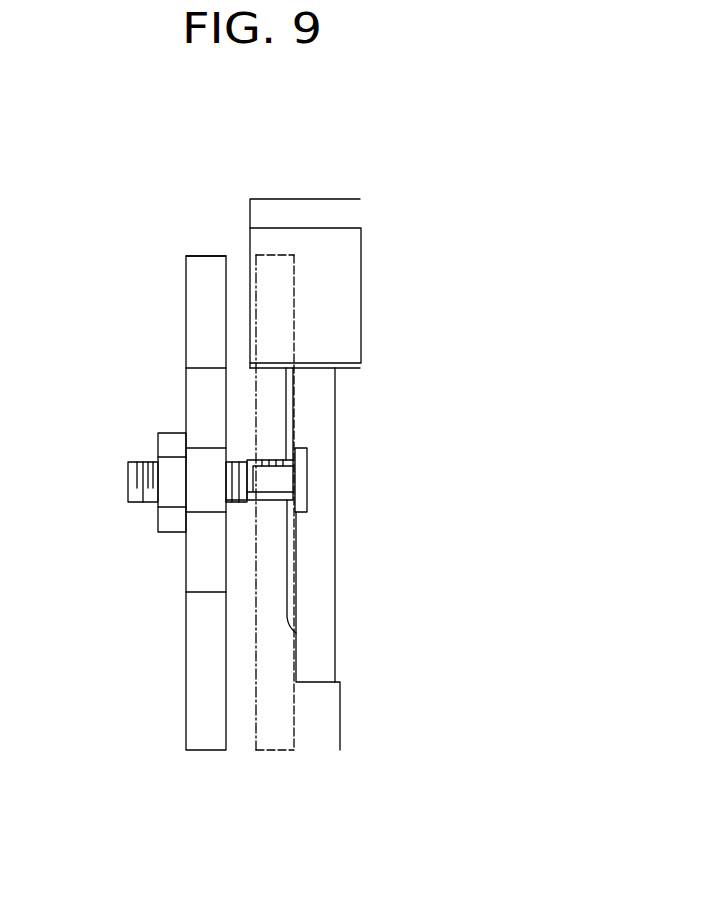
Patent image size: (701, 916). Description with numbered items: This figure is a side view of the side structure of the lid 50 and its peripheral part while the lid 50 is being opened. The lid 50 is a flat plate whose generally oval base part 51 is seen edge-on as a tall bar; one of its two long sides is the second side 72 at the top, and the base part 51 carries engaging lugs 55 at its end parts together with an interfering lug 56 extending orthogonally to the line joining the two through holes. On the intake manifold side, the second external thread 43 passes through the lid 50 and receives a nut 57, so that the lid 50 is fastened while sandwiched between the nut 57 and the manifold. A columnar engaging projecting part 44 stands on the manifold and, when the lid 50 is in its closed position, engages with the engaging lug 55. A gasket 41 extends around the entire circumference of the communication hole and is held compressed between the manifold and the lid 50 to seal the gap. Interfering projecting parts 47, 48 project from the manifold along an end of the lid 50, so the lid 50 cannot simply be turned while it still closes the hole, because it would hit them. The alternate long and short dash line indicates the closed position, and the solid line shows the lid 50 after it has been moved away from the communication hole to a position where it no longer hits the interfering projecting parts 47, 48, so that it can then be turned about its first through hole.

The gasket 41 is at (290, 405).
The second external thread 43 is at (128, 480).
The engaging projecting part 44 is at (273, 463).
The interfering projecting part 47 is at (250, 207).
The interfering projecting part 48 is at (250, 247).
The lid 50 is at (185, 273).
The base part 51 is at (200, 327).
The engaging lug 55 is at (207, 395).
The interfering lug 56 is at (188, 734).
The nut 57 is at (168, 532).
The second side 72 is at (197, 256).